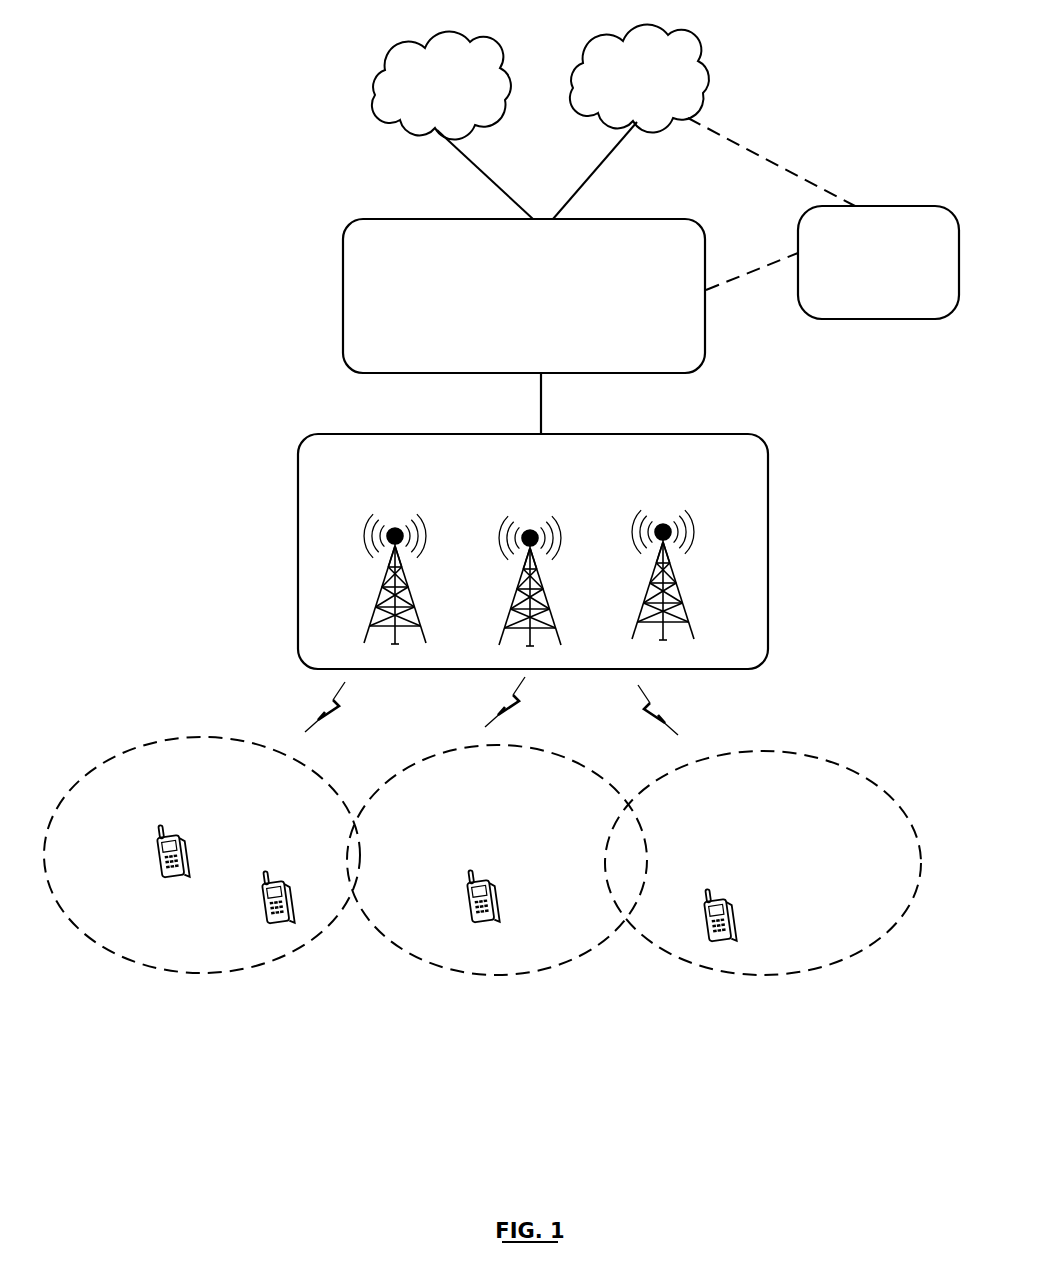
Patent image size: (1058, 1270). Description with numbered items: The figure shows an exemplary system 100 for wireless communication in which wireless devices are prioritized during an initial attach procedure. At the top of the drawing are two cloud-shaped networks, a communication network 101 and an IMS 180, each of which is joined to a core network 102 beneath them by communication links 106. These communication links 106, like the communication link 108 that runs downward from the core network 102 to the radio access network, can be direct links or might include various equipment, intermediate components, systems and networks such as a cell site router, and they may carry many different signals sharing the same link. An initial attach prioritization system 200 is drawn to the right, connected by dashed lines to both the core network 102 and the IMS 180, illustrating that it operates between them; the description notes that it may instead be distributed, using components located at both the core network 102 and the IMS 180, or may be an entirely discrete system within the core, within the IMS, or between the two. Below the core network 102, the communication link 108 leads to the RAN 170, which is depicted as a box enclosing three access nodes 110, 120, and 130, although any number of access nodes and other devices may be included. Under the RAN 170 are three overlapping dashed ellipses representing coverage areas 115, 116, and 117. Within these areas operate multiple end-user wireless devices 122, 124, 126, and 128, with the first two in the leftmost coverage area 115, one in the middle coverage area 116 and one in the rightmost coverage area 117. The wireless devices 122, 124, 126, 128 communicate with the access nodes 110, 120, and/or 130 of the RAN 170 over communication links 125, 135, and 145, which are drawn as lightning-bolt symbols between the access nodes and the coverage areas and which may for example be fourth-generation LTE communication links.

The system 100 is at (738, 56).
The communication network 101 is at (458, 97).
The IMS 180 is at (623, 89).
The communication links 106 is at (488, 178).
The core network 102 is at (524, 296).
The initial attach prioritization system 200 is at (866, 311).
The communication link 108 is at (538, 404).
The radio access network (RAN) 170 is at (533, 551).
The access node 110 is at (352, 518).
The access node 120 is at (572, 512).
The access node 130 is at (708, 515).
The communication link 125 is at (330, 700).
The communication link 135 is at (493, 710).
The communication link 145 is at (658, 698).
The coverage area 115 is at (130, 745).
The coverage area 116 is at (428, 752).
The coverage area 117 is at (823, 758).
The wireless device 122 is at (155, 850).
The wireless device 124 is at (272, 882).
The wireless device 126 is at (480, 880).
The wireless device 128 is at (715, 900).